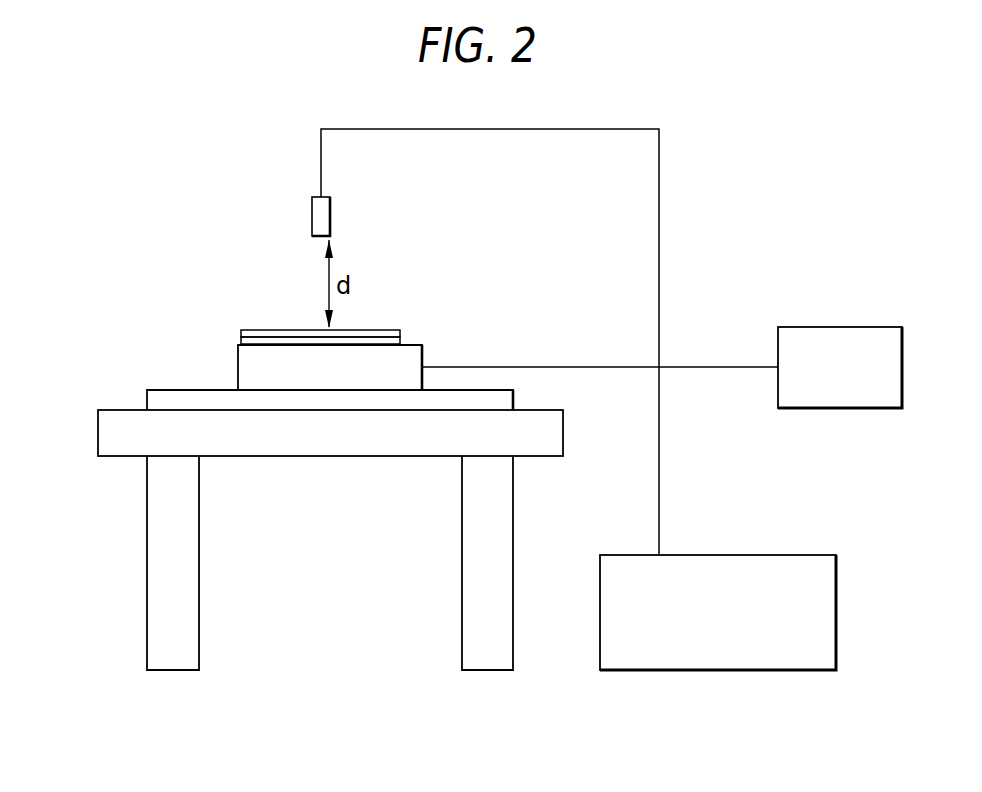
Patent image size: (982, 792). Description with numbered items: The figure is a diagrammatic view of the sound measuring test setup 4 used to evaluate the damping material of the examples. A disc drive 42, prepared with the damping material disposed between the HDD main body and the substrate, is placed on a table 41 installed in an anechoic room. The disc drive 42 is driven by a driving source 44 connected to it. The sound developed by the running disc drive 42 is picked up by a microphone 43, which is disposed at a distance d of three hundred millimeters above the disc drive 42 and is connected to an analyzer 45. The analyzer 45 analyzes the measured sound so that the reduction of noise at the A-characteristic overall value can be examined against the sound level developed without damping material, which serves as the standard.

The measuring apparatus 4 is at (120, 206).
The table 41 is at (98, 436).
The disc drive 42 is at (239, 368).
The microphone 43 is at (310, 213).
The driving source 44 is at (840, 333).
The analyzer 45 is at (760, 560).